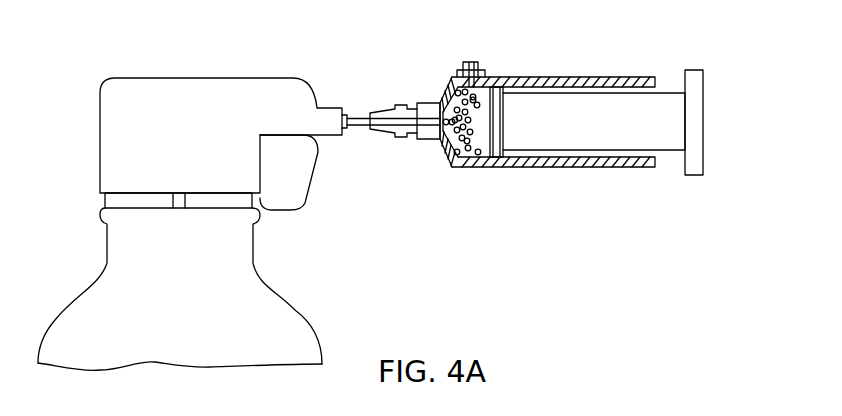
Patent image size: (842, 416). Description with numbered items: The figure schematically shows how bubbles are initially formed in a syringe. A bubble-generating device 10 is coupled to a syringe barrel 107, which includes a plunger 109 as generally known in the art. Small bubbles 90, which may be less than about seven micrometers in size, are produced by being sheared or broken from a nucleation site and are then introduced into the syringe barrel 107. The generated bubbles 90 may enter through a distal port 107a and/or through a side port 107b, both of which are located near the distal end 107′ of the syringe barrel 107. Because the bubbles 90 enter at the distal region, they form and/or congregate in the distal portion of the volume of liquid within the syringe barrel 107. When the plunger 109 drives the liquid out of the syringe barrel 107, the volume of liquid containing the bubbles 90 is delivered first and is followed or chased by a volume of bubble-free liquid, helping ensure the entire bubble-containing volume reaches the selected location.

The spray device 10 is at (182, 58).
The distal port 107a is at (384, 111).
The side port 107b is at (483, 63).
The syringe barrel 107 is at (570, 76).
The distal end 107′ is at (435, 150).
The plunger 109 is at (665, 102).
The bubble 90 is at (468, 151).